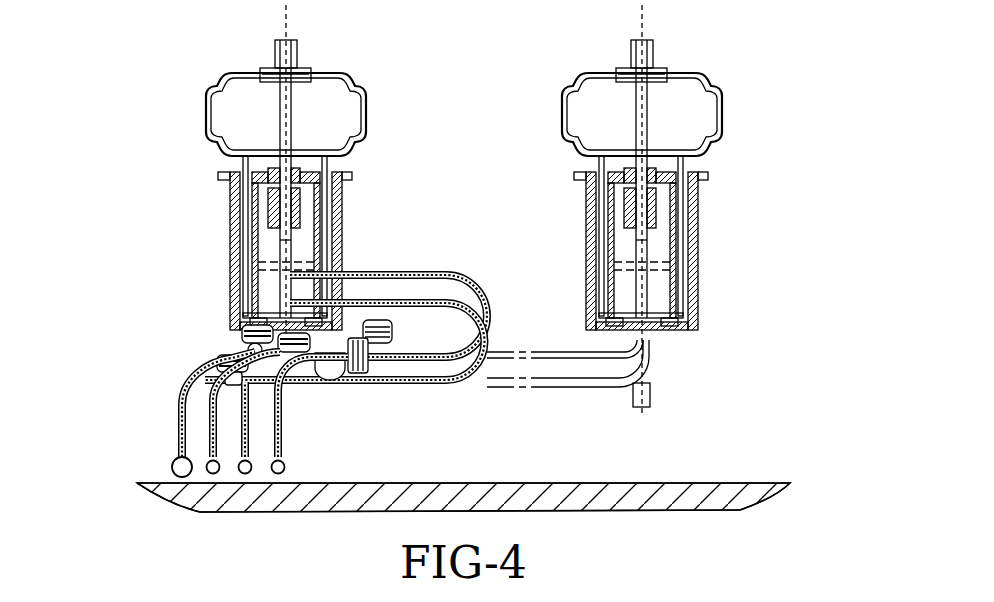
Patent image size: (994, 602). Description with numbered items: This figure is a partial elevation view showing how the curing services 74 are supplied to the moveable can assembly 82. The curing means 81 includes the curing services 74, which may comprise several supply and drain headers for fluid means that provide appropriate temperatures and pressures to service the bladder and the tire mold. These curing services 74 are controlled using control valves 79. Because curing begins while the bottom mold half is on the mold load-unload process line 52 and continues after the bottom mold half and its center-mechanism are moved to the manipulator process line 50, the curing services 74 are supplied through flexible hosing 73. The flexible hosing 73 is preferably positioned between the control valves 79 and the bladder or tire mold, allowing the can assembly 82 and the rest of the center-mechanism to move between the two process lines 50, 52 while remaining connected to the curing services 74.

The manipulator process line 50 is at (287, 14).
The mold load-unload process line 52 is at (643, 17).
The can assembly 82 is at (353, 212).
The flexible hosing 73 is at (484, 318).
The control valves 79 is at (220, 358).
The curing means 81 is at (150, 383).
The curing services 74 is at (157, 408).